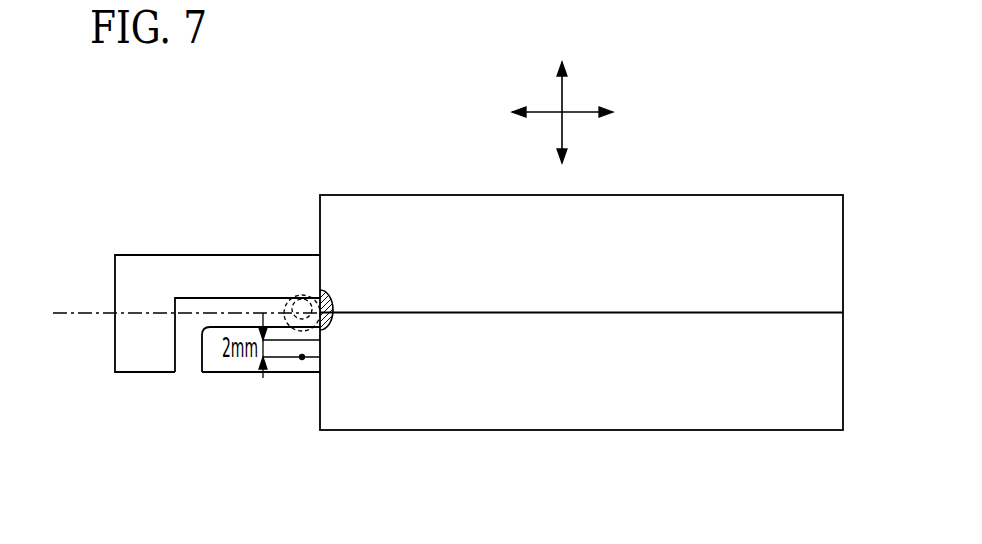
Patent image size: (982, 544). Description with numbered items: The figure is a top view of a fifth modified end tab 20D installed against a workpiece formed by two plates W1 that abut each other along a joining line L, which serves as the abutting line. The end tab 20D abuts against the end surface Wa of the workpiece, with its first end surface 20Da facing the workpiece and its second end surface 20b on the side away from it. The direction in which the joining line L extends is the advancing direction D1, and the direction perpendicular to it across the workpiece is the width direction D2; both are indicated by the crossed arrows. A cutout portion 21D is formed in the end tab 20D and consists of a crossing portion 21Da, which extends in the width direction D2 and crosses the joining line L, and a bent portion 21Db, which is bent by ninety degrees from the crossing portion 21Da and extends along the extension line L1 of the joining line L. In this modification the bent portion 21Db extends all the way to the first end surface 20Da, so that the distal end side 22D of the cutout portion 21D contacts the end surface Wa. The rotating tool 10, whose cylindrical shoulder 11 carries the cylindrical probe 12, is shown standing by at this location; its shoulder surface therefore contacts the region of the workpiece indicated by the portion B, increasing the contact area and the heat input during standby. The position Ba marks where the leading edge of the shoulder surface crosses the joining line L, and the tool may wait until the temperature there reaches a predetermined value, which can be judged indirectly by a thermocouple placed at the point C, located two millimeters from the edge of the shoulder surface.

The rotating tool 10 is at (472, 65).
The cylindrical shoulder 11 is at (322, 288).
The cylindrical probe 12 is at (299, 295).
The first end surface 20Da is at (322, 266).
The distal end side 22D is at (298, 303).
The portion B is at (327, 292).
The position Ba is at (334, 315).
The cutout portion 21D is at (320, 340).
The crossing portion 21Da is at (185, 340).
The bent portion 21Db is at (210, 313).
The end tab 20D is at (243, 373).
The second end surface 20b is at (113, 335).
The point C is at (302, 357).
The extension line L1 is at (88, 305).
The joining line L is at (807, 312).
The plate W1 is at (717, 193).
The end surface Wa is at (318, 408).
The advancing direction D1 is at (578, 110).
The width direction D2 is at (565, 128).